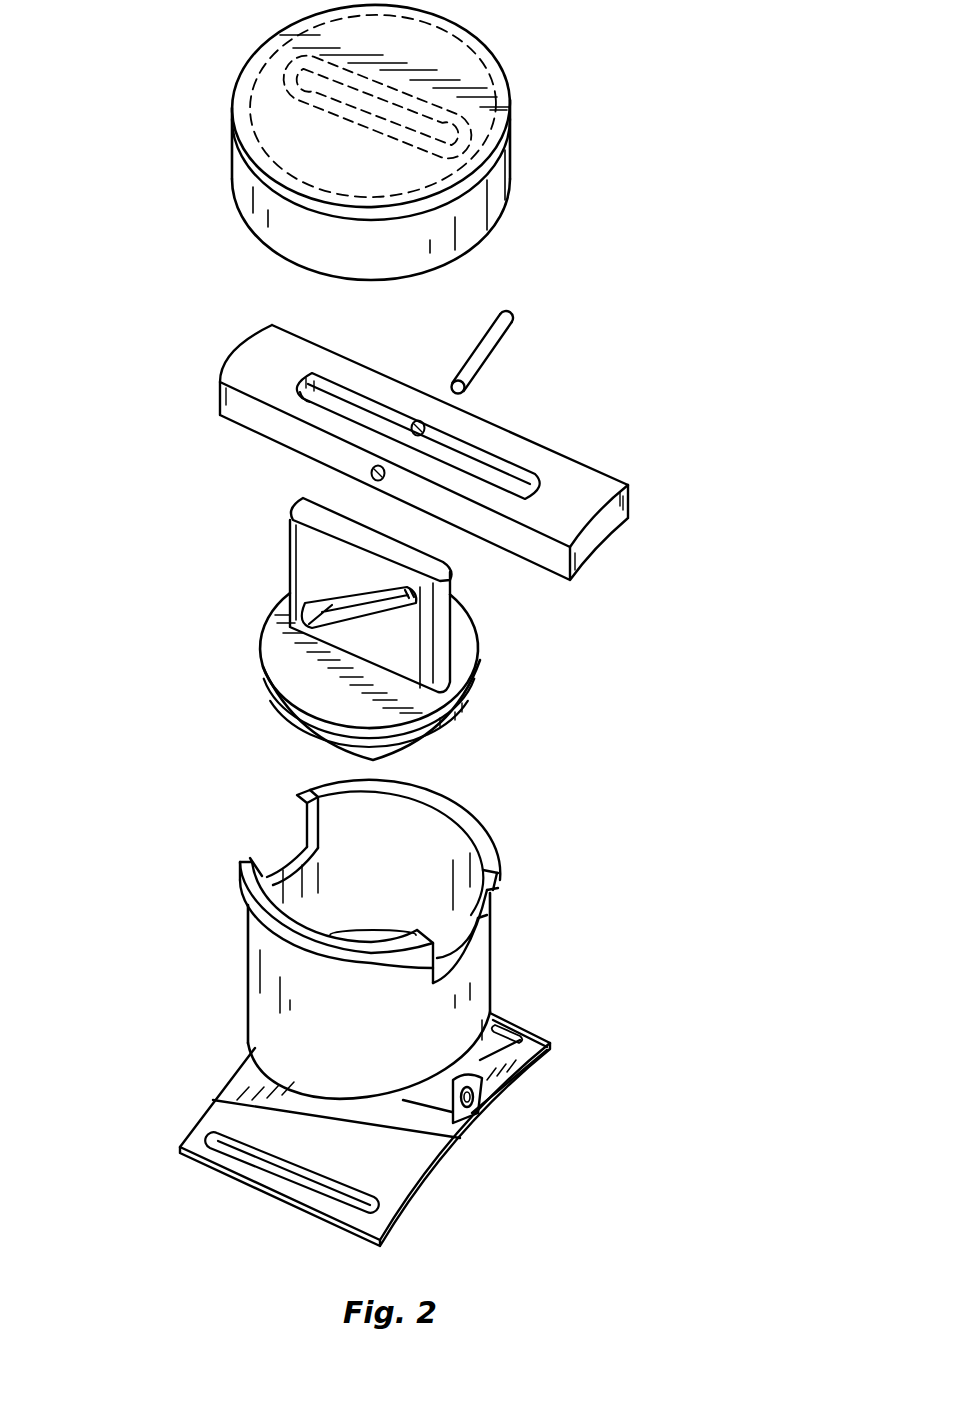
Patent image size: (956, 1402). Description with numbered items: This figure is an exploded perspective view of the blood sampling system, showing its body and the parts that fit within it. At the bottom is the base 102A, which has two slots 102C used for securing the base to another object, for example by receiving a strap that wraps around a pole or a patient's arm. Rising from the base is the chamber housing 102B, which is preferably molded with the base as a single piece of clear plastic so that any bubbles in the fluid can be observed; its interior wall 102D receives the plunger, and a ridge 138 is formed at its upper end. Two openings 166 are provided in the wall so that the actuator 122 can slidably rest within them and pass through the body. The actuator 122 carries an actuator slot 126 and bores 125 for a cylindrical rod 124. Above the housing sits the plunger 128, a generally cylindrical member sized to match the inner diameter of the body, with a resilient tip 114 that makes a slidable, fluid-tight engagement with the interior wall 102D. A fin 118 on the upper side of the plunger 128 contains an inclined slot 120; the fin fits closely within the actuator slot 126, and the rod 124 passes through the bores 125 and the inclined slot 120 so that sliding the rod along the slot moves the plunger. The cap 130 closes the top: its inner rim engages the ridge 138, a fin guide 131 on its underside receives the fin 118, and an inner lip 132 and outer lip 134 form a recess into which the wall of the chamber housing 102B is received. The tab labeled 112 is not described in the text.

The cap 130 is at (447, 63).
The fin guide 131 is at (467, 150).
The inner lip 132 is at (233, 112).
The outer lip 134 is at (493, 183).
The actuator 122 is at (593, 492).
The rod 124 is at (487, 343).
The bores 125 is at (411, 427).
The actuator slot 126 is at (477, 467).
The fin 118 is at (412, 640).
The inclined slot 120 is at (287, 590).
The tip 114 is at (383, 763).
The plunger 128 is at (463, 703).
The ridge 138 is at (498, 887).
The openings 166 is at (307, 820).
The interior wall 102D is at (447, 832).
The chamber housing 102B is at (477, 1005).
The base 102A is at (400, 1153).
The slots 102C is at (268, 1165).
The mounting tab with hole 112 is at (472, 1108).